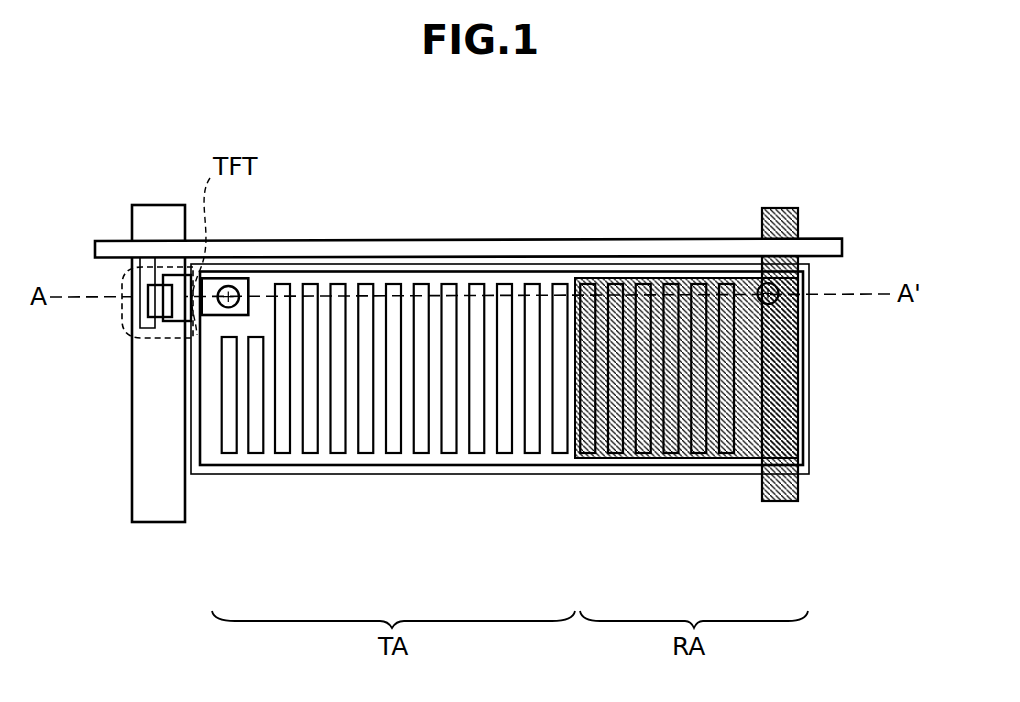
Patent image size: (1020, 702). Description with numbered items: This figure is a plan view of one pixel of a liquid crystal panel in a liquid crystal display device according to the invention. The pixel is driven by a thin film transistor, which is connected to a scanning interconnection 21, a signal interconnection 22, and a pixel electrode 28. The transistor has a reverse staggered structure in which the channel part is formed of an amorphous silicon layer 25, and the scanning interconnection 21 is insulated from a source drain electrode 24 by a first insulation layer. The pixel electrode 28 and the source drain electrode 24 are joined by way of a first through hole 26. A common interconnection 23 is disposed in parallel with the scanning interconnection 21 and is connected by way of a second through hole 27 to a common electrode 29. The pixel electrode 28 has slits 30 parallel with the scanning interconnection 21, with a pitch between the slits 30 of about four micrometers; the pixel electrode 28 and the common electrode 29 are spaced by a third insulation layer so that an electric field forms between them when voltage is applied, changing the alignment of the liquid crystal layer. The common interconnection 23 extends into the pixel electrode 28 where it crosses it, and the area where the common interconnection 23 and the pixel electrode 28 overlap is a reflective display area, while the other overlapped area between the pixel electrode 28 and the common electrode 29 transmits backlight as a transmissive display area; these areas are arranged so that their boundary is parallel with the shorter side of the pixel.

The scanning interconnection 21 is at (157, 475).
The signal interconnection 22 is at (420, 242).
The common interconnection 23 is at (762, 494).
The source drain electrode 24 is at (180, 315).
The amorphous silicon (a-Si) layer 25 is at (148, 312).
The first through hole 26 is at (228, 297).
The second through hole 27 is at (762, 285).
The pixel electrode 28 is at (327, 454).
The common electrode 29 is at (427, 470).
The slits 30 is at (505, 440).